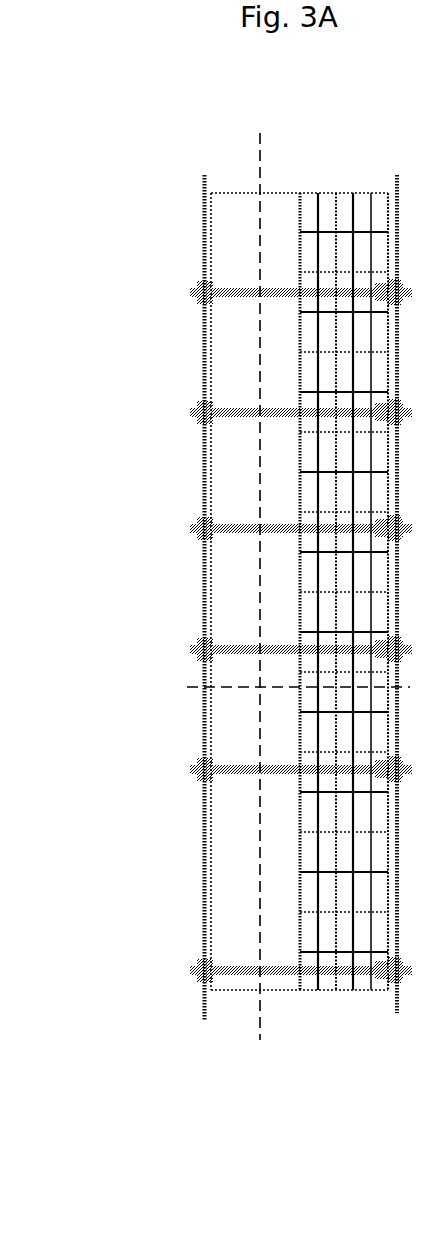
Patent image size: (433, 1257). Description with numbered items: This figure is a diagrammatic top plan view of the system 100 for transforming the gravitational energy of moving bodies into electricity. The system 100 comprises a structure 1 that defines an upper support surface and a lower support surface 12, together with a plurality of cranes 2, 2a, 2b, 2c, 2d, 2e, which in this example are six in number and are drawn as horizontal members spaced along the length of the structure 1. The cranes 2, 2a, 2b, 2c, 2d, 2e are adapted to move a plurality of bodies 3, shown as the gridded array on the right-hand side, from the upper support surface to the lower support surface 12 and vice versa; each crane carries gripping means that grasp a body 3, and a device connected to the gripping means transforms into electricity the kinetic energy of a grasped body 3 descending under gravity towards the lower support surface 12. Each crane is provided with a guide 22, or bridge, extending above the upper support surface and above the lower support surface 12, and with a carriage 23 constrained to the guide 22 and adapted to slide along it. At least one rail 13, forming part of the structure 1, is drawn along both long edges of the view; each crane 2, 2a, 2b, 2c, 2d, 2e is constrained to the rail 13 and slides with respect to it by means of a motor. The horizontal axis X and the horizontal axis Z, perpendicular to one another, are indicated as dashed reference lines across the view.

The system 100 is at (183, 163).
The structure 1 is at (223, 193).
The crane 2 is at (215, 967).
The crane 2a is at (227, 767).
The crane 2b is at (227, 648).
The crane 2c is at (235, 528).
The crane 2d is at (222, 410).
The crane 2e is at (240, 290).
The body 3 is at (347, 205).
The lower support surface 12 is at (240, 900).
The rail 13 is at (207, 1003).
The guide 22 is at (292, 966).
The carriage 23 is at (380, 966).
The axis X is at (187, 687).
The axis Z is at (260, 1022).